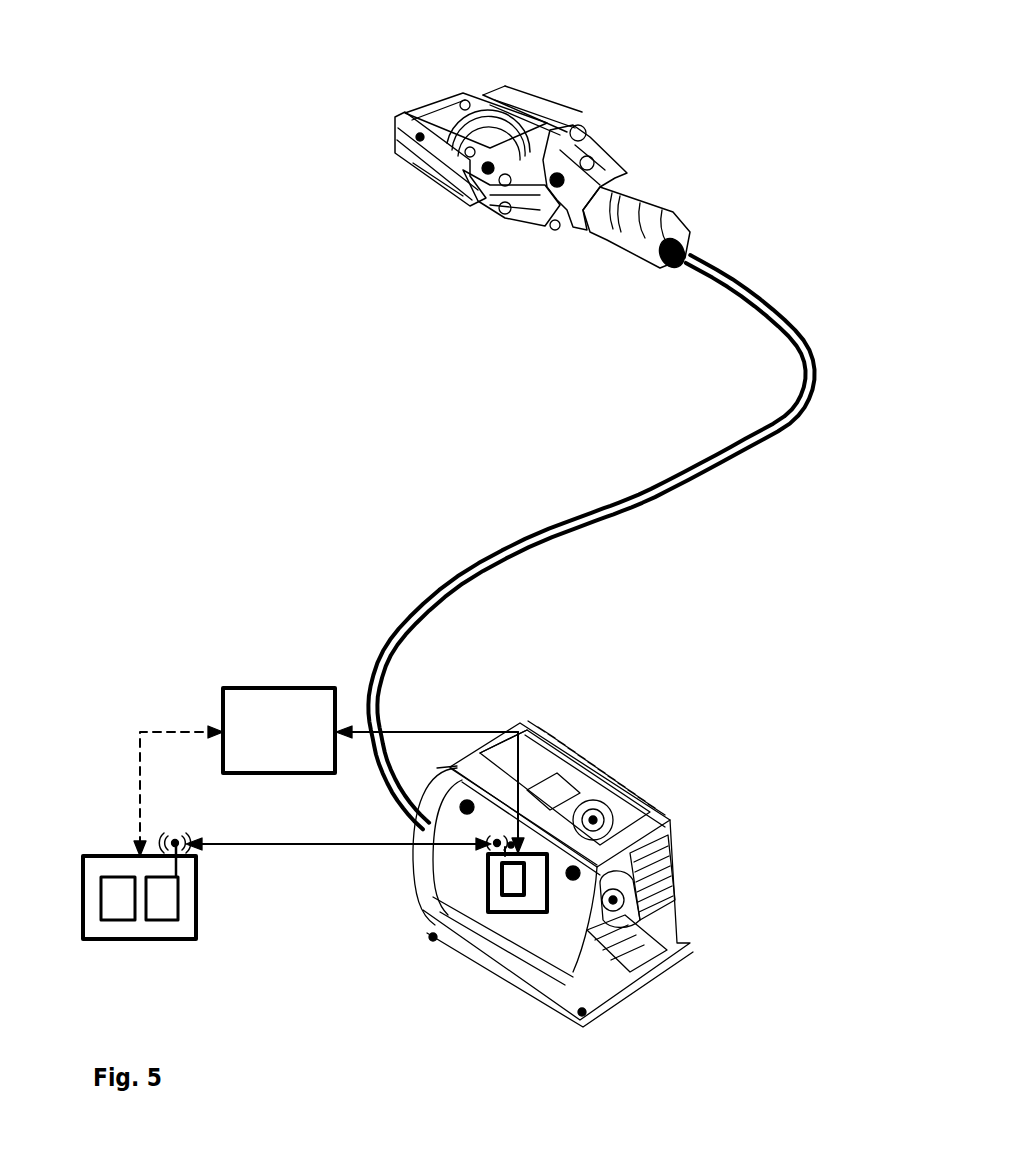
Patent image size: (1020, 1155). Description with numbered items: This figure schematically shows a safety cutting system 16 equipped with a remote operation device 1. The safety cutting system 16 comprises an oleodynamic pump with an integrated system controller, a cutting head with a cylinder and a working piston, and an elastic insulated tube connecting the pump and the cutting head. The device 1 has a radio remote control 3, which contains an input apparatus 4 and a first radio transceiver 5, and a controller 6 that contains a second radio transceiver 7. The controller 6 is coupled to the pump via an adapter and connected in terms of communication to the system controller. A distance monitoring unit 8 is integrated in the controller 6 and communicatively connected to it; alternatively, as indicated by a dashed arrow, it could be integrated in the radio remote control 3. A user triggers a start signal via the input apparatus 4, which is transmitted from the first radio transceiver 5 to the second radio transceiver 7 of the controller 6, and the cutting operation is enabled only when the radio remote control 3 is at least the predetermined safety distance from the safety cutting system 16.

The device for remotely operating a safety processing system 1 is at (208, 650).
The radio remote control 3 is at (95, 865).
The input apparatus 4 is at (113, 908).
The first radio transceiver 5 is at (166, 908).
The controller 6 is at (523, 897).
The second radio transceiver 7 is at (507, 874).
The distance monitoring unit 8 is at (281, 703).
The safety cutting system 16 is at (771, 85).